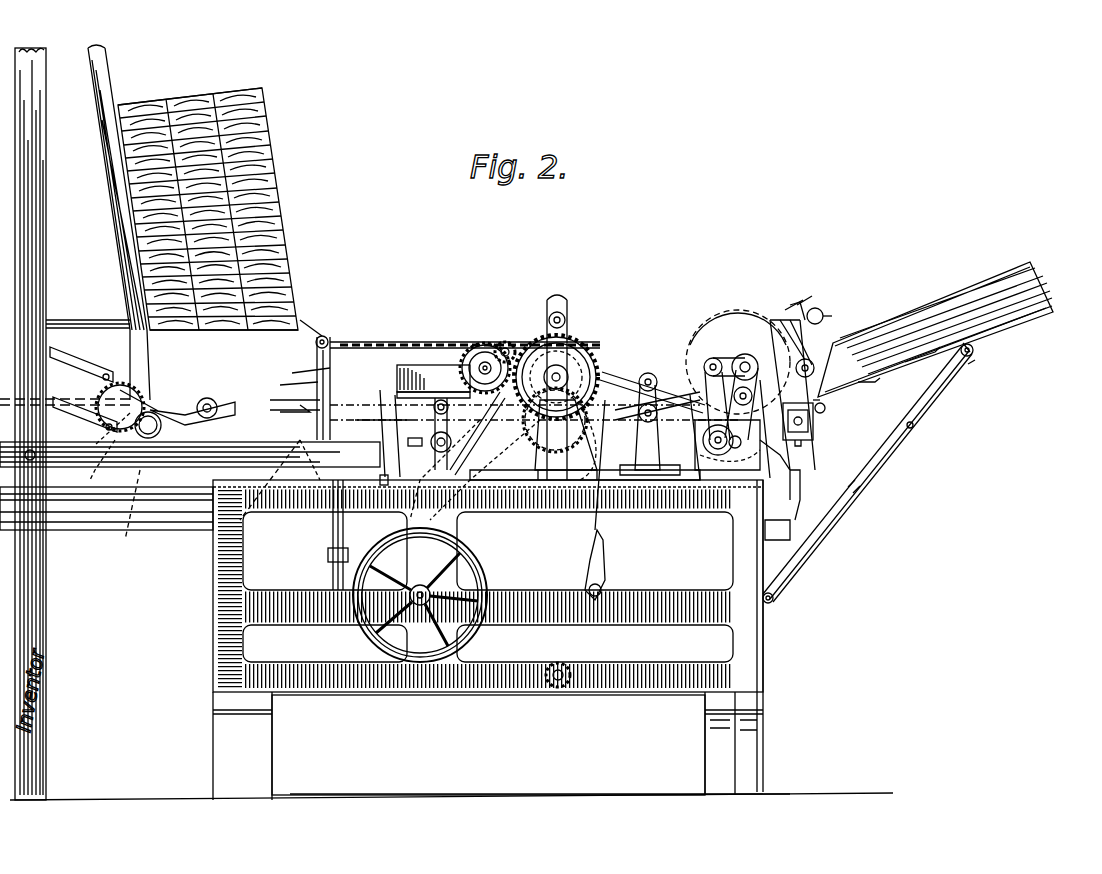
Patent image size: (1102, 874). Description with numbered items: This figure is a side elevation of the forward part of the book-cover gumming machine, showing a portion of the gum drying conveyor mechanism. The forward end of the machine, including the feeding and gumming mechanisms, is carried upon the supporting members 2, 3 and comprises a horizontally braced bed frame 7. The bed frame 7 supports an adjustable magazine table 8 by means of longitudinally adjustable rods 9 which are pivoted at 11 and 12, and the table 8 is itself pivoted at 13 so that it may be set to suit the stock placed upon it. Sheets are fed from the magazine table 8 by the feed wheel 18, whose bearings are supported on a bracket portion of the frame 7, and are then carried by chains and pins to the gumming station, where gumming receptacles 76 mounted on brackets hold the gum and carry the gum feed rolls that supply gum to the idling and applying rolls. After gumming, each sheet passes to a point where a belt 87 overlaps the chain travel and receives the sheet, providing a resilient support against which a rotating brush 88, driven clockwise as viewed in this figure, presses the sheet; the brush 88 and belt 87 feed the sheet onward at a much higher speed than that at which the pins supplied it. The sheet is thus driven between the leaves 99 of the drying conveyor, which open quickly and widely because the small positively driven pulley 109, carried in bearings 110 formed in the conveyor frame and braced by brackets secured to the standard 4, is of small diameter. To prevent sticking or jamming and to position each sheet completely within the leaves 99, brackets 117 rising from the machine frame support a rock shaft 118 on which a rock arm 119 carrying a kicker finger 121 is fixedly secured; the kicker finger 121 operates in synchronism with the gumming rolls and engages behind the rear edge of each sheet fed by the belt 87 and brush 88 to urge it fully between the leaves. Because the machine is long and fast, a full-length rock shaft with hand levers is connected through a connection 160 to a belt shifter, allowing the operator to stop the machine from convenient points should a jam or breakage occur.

The supporting member 2 is at (760, 722).
The supporting member 3 is at (277, 733).
The standard 4 is at (47, 647).
The bed frame 7 is at (755, 636).
The magazine table 8 is at (1030, 266).
The longitudinally adjustable rod 9 is at (828, 533).
The pivot 11 is at (820, 608).
The pivot 12 is at (975, 352).
The pivot 13 is at (825, 410).
The feed wheel 18 is at (730, 318).
The gumming receptacle 76 is at (435, 372).
The belt 87 is at (282, 510).
The brush 88 is at (330, 402).
The leaves 99 is at (262, 108).
The positively driven pulley 109 is at (206, 500).
The bearings 110 is at (185, 457).
The bracket 117 is at (330, 366).
The rock shaft 118 is at (322, 335).
The rock arm 119 is at (318, 382).
The kicker finger 121 is at (333, 305).
The connection 160 is at (328, 553).